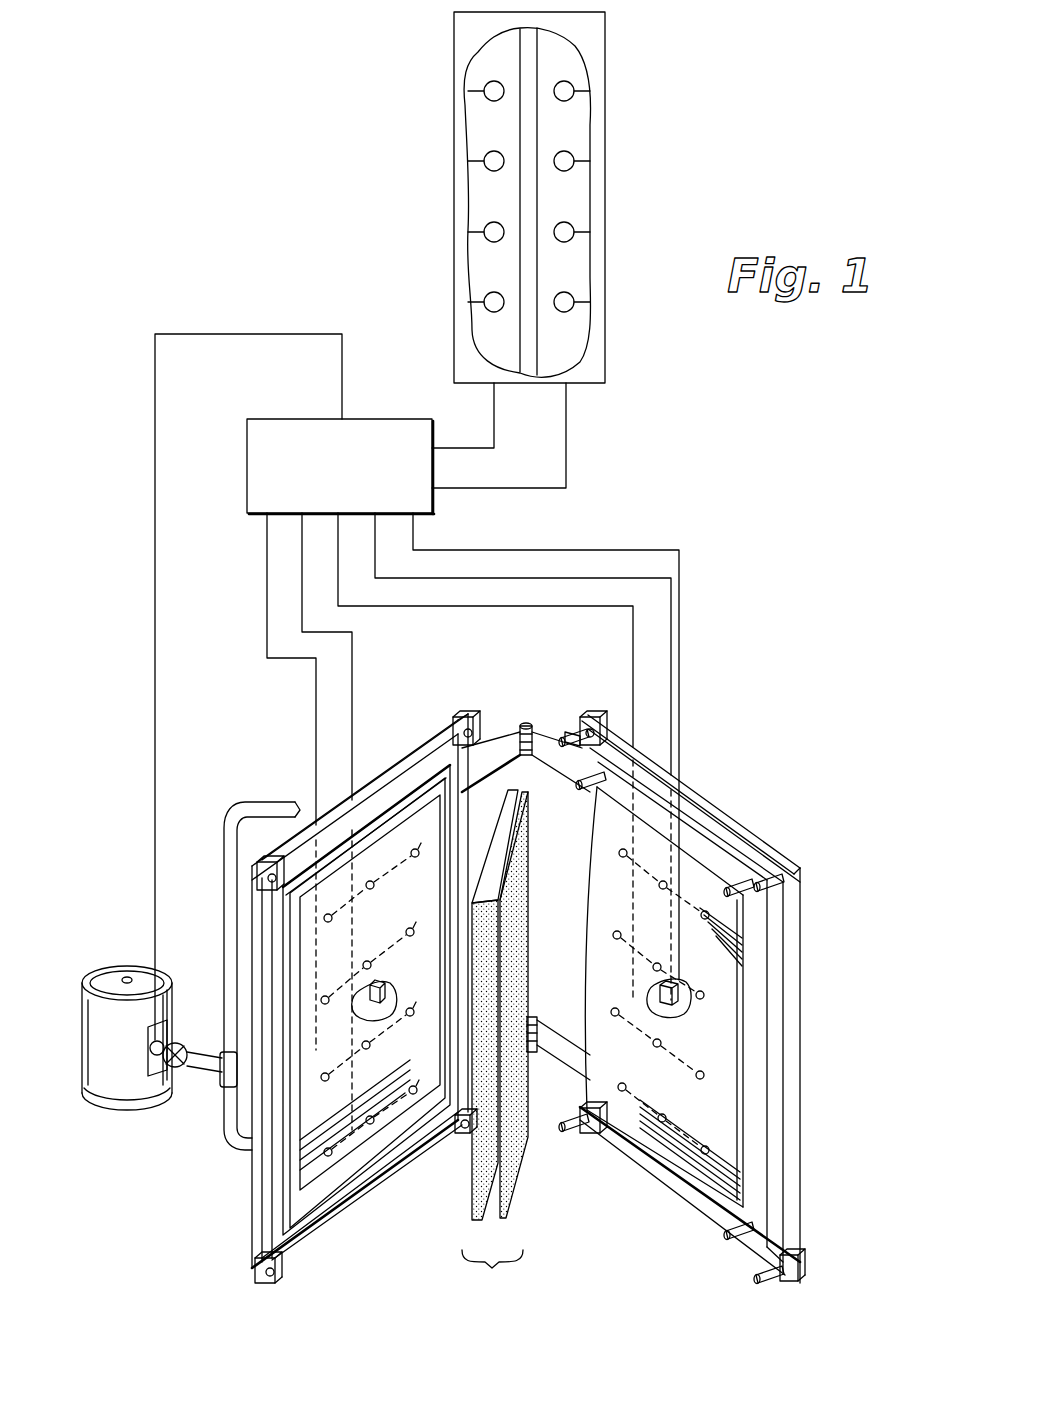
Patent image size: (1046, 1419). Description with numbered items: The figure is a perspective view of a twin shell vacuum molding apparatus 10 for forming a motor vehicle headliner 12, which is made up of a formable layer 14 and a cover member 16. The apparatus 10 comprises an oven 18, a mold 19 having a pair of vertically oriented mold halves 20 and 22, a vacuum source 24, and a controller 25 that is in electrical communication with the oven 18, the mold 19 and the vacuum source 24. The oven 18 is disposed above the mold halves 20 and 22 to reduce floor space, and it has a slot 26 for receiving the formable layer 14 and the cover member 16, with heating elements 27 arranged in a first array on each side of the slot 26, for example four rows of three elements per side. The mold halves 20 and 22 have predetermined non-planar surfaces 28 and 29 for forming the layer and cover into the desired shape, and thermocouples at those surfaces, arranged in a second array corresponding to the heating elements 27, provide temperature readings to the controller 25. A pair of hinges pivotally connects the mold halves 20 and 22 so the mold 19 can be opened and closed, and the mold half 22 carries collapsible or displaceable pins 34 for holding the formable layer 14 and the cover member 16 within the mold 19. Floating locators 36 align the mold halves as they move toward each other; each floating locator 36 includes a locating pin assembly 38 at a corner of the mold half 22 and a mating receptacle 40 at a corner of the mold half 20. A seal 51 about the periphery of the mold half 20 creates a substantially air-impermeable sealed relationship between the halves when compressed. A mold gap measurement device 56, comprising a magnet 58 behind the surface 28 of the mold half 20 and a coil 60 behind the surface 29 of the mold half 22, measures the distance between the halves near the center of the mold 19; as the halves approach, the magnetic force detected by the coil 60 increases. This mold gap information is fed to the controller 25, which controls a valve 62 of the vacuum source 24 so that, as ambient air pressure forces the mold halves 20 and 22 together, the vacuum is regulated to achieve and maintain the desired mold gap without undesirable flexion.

The apparatus 10 is at (801, 486).
The motor vehicle headliner 12 is at (487, 1045).
The formable layer 14 is at (472, 1214).
The cover member 16 is at (510, 1214).
The oven 18 is at (605, 210).
The mold 19 is at (726, 778).
The mold half 20 is at (432, 730).
The mold half 22 is at (805, 995).
The vacuum source 24 is at (145, 1100).
The controller 25 is at (290, 419).
The slot 26 is at (532, 132).
The heating elements 27 is at (490, 294).
The non-planar surface 28 is at (300, 1125).
The non-planar surface 29 is at (682, 1138).
The displaceable pins 34 is at (742, 882).
The floating locator 36 is at (803, 1300).
The locating pin assembly 38 is at (590, 716).
The mating receptacle 40 is at (462, 716).
The seal 51 is at (332, 848).
The mold gap measurement device 56 is at (354, 986).
The magnet 58 is at (360, 1010).
The coil 60 is at (682, 1010).
The valve 62 is at (178, 1070).